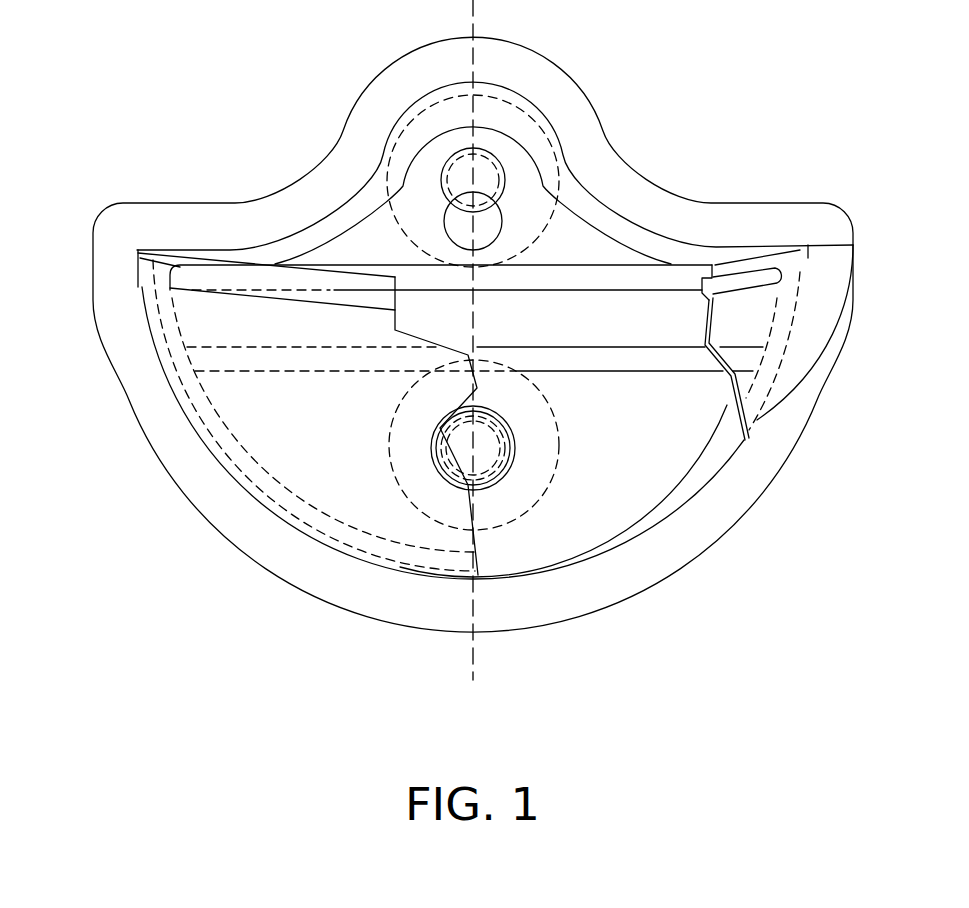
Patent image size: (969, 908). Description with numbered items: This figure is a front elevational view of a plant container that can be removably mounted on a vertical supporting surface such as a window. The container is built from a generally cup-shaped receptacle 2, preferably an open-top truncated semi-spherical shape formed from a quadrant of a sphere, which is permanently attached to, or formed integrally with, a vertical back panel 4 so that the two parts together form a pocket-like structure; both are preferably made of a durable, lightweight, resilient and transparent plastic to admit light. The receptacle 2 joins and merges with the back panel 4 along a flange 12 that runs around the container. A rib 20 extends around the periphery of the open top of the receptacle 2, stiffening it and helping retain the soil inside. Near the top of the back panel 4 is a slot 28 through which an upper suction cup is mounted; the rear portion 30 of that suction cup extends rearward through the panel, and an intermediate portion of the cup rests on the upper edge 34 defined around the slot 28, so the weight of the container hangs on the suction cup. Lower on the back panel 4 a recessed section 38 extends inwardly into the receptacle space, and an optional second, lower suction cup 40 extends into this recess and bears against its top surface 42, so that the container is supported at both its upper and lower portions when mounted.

The cup-shaped receptacle 2 is at (205, 447).
The back panel 4 is at (108, 210).
The flange 12 is at (98, 333).
The rib 20 is at (185, 281).
The slot 28 is at (505, 212).
The rear portion of the suction cup 30 is at (476, 167).
The upper edge 34 is at (443, 167).
The recessed section 38 is at (515, 460).
The lower suction cup 40 is at (490, 473).
The top surface of the recess 42 is at (490, 410).